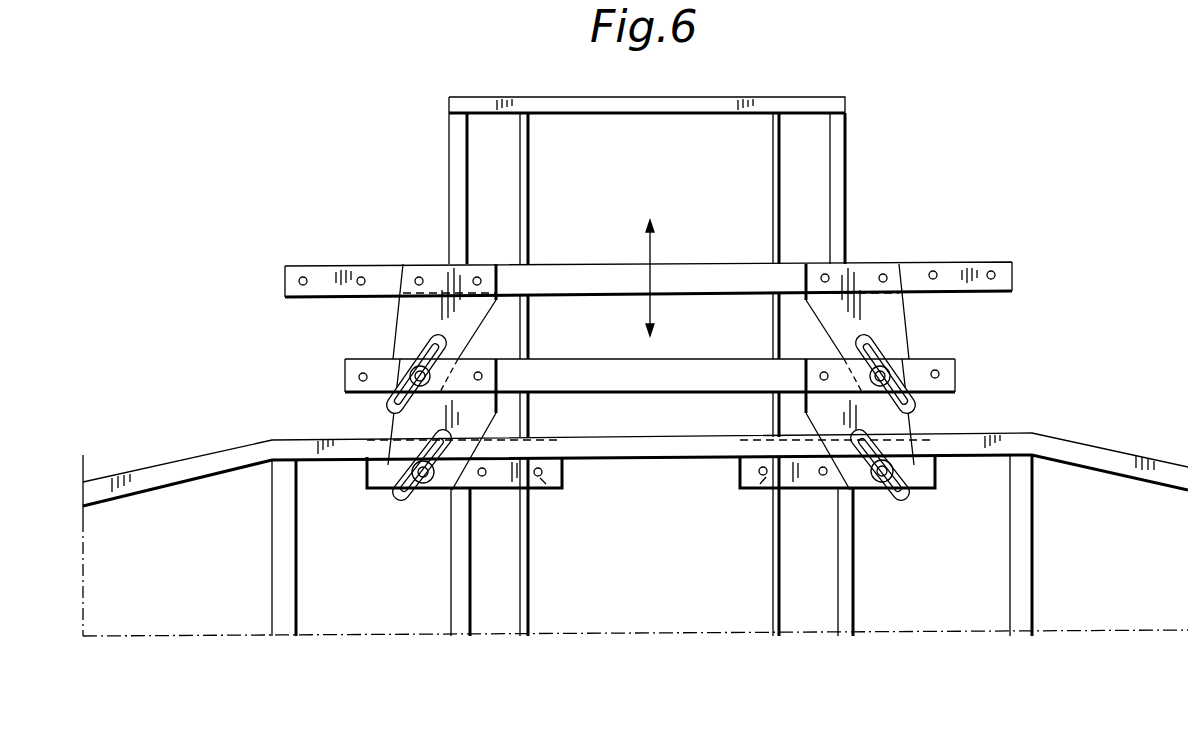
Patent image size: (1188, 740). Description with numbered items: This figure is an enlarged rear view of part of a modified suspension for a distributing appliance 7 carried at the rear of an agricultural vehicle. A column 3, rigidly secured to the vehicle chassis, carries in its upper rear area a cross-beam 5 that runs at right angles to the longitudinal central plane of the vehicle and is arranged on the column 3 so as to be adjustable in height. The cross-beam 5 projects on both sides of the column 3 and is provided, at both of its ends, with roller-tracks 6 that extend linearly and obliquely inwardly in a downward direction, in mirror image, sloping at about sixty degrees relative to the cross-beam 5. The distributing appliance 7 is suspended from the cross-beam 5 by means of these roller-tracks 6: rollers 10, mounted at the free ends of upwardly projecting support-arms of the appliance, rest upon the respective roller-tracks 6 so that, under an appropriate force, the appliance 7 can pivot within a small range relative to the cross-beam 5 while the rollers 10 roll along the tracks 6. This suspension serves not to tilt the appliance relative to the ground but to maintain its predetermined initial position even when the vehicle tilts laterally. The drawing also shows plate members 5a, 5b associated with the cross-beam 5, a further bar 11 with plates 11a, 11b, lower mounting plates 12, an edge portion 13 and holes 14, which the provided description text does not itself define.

The column 3 is at (840, 178).
The cross-beam 5 is at (713, 268).
The left attachment plate of bar 5 5a is at (485, 318).
The right attachment plate of bar 5 5b is at (817, 318).
The roller-track 6 is at (447, 341).
The distributing appliance 7 is at (161, 452).
The roller 10 is at (388, 403).
The lower cross bar 11 is at (687, 364).
The left attachment plate of bar 11 11a is at (490, 414).
The right attachment plate of bar 11 11b is at (812, 414).
The mounting plate 12 is at (430, 340).
The plate edge 13 is at (546, 482).
The hole 14 is at (540, 478).